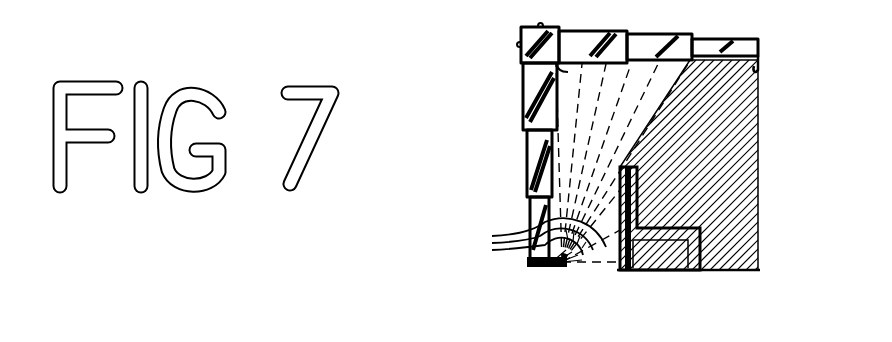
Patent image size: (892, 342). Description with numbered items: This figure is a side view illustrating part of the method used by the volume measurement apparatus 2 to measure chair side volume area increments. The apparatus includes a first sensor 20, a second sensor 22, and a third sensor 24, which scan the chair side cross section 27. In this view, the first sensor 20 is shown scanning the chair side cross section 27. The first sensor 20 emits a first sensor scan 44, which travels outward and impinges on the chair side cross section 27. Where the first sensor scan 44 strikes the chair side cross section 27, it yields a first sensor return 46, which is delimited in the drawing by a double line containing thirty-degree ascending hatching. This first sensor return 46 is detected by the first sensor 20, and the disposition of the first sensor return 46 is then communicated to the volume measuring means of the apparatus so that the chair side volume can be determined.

The volume measurement apparatus 2 is at (470, 62).
The second sensor 22 is at (572, 62).
The third sensor 24 is at (760, 70).
The first sensor scan 44 is at (528, 240).
The first sensor 20 is at (556, 268).
The chair side cross section 27 is at (624, 273).
The first sensor return 46 is at (726, 273).